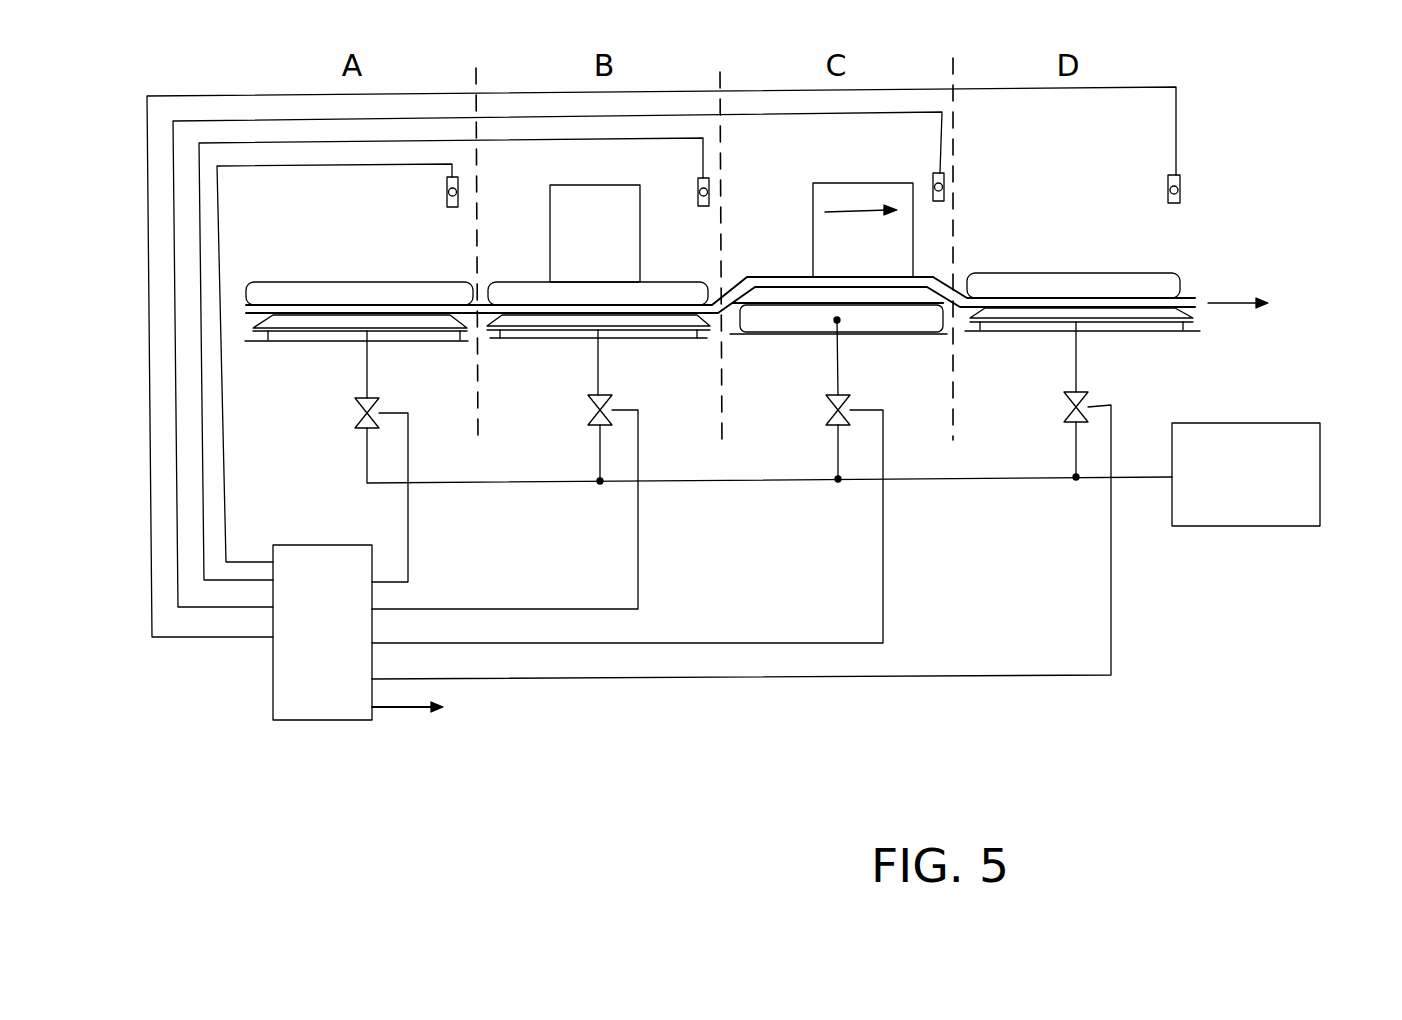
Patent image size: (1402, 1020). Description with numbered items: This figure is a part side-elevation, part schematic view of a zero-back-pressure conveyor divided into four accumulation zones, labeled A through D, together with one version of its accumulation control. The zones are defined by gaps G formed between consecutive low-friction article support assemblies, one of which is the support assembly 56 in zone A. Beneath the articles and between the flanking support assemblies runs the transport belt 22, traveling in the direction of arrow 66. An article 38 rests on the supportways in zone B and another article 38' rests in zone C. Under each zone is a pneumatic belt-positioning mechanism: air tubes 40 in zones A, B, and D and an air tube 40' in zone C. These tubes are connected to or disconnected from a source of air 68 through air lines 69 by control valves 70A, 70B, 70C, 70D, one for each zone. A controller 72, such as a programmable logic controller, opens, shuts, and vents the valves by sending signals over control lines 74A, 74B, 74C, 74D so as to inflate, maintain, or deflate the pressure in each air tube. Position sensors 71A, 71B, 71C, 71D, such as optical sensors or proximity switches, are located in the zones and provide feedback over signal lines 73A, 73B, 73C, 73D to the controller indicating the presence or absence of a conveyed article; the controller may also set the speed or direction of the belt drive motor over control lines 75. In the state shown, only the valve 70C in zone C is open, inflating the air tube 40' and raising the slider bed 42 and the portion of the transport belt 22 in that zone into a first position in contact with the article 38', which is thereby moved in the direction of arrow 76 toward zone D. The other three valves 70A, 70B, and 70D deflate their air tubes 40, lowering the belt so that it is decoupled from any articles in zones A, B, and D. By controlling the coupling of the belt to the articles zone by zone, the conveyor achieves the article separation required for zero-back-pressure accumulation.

The transport belt 22 is at (1140, 307).
The article 38 is at (613, 233).
The article 38' is at (839, 228).
The air tube 40 is at (598, 351).
The air tube 40' is at (838, 349).
The slider bed 42 is at (892, 297).
The tray 56 is at (263, 283).
The arrow 66 is at (1225, 303).
The source of air 68 is at (1320, 480).
The air lines 69 is at (990, 478).
The control valve 70A is at (355, 413).
The control valve 70B is at (588, 412).
The control valve 70C is at (826, 412).
The control valve 70D is at (1064, 409).
The position sensor 71A is at (447, 192).
The position sensor 71B is at (698, 186).
The position sensor 71C is at (935, 178).
The position sensor 71D is at (1168, 178).
The controller 72 is at (320, 720).
The signal line 73A is at (226, 390).
The signal line 73B is at (204, 423).
The signal line 73C is at (178, 477).
The signal line 73D is at (152, 518).
The control line 74A is at (408, 535).
The control line 74B is at (638, 548).
The control line 74C is at (883, 571).
The control line 74D is at (1111, 606).
The control lines 75 is at (402, 707).
The arrow 76 is at (862, 210).
The gap G is at (464, 278).